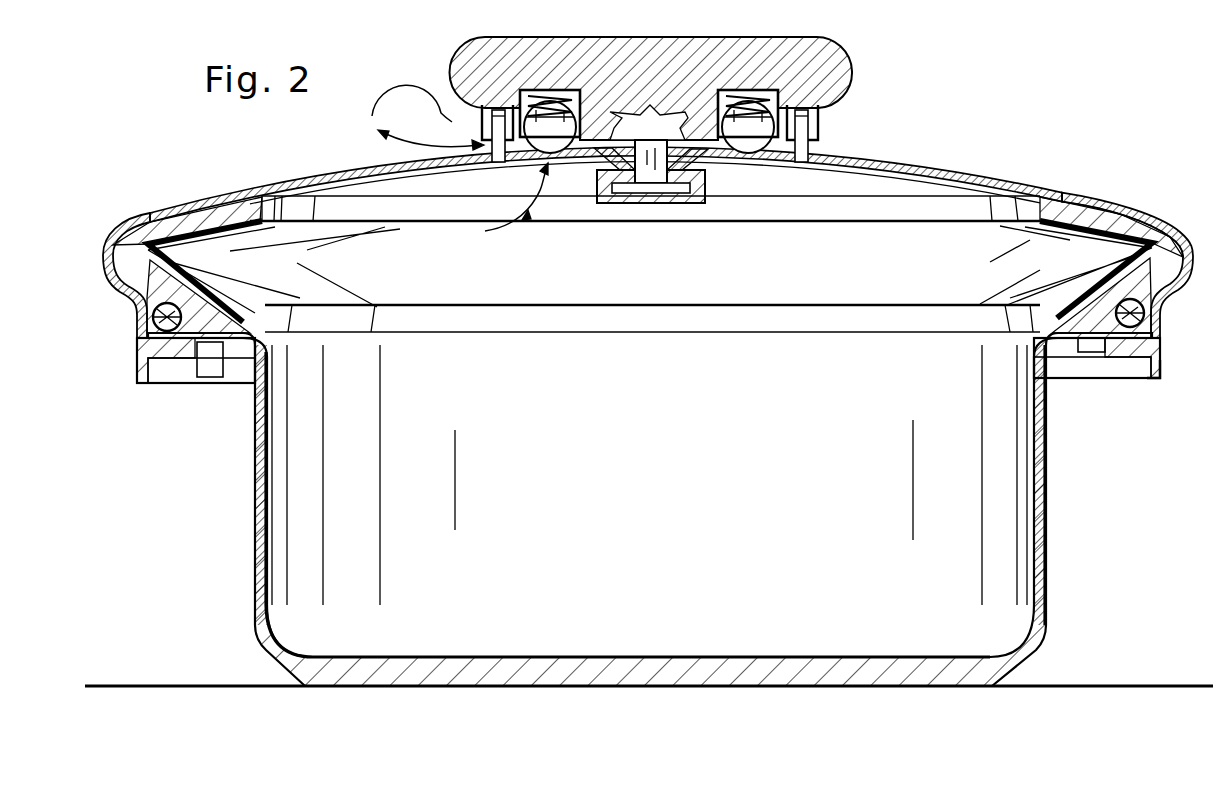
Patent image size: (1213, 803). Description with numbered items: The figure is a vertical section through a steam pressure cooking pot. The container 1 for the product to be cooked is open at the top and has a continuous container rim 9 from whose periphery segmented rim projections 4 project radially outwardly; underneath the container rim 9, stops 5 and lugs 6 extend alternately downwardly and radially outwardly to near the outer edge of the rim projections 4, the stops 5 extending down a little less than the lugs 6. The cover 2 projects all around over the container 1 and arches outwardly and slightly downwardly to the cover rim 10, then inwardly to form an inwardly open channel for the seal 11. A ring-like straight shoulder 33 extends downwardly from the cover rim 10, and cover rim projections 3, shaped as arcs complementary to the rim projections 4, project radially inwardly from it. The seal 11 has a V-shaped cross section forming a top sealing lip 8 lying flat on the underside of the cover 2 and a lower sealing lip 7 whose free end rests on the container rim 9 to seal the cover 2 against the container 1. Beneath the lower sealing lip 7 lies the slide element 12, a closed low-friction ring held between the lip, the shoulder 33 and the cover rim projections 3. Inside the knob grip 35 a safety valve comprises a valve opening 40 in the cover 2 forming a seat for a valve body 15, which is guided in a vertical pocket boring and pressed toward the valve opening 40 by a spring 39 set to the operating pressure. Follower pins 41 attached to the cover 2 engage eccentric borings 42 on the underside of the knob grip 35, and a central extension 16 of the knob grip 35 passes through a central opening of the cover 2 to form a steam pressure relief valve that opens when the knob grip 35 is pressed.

The container 1 is at (1048, 492).
The cover 2 is at (962, 180).
The cover rim projections 3 is at (1118, 348).
The rim projections 4 is at (185, 345).
The stops 5 is at (1060, 352).
The lugs 6 is at (246, 366).
The lower sealing lip 7 is at (1085, 292).
The top sealing lip 8 is at (1050, 200).
The container rim 9 is at (225, 350).
The cover rim 10 is at (1150, 222).
The seal 11 is at (1163, 226).
The slide element 12 is at (1144, 312).
The valve body 15 is at (482, 125).
The extension 16 is at (395, 164).
The shoulder 33 is at (1157, 376).
The knob grip 35 is at (818, 72).
The spring 39 is at (540, 118).
The valve opening 40 is at (495, 158).
The follower pins 41 is at (812, 130).
The borings 42 is at (820, 108).